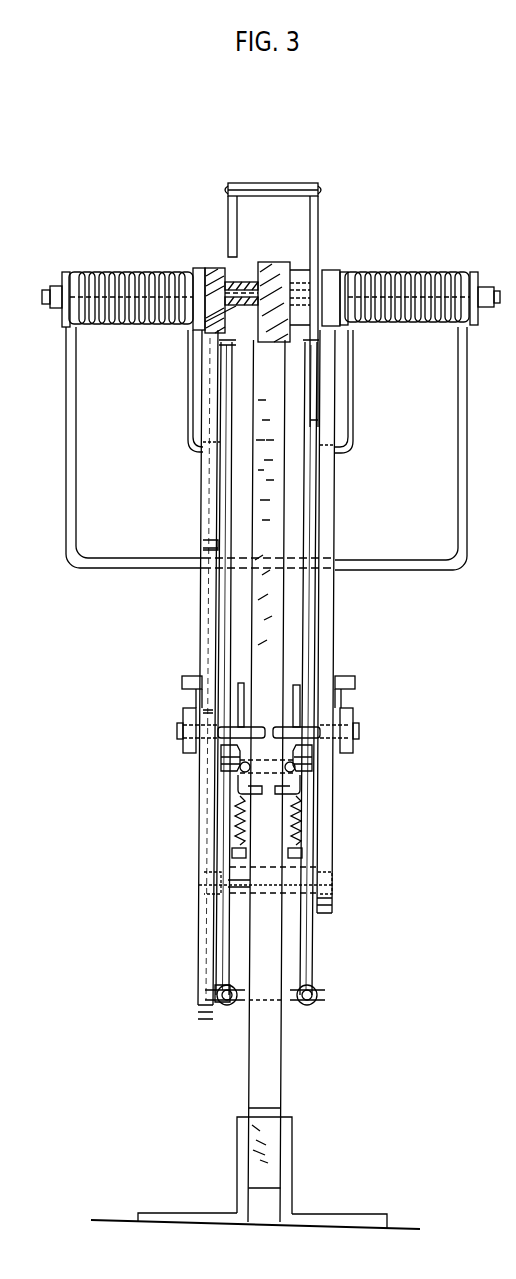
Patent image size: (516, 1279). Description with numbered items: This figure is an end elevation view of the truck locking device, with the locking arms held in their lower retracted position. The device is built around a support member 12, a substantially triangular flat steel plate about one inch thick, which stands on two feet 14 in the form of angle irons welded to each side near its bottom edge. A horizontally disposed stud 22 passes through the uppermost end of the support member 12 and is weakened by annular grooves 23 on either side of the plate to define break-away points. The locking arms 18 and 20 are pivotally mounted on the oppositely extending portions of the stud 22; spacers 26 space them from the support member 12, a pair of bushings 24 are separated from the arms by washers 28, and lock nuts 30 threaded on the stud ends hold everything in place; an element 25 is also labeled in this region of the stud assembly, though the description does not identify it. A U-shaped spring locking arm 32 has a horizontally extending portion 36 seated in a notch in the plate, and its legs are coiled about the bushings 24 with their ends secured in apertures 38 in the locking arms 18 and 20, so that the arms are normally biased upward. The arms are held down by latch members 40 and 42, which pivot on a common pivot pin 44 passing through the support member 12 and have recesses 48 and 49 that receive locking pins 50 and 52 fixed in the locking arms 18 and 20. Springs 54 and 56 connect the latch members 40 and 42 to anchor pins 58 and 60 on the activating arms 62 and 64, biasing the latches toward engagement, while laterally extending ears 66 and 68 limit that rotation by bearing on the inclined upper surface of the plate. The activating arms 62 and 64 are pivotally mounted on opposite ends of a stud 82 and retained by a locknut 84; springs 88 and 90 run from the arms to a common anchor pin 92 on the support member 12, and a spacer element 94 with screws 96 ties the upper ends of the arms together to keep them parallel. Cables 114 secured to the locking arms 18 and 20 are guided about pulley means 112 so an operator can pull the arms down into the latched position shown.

The support member 12 is at (275, 1097).
The feet 14 is at (240, 1152).
The locking arm 18 is at (210, 963).
The locking arm 20 is at (336, 908).
The stud 22 is at (48, 286).
The annular grooves 23 is at (262, 335).
The bushings 24 is at (198, 270).
The clamp face 25 is at (212, 328).
The spacers 26 is at (288, 265).
The washers 28 is at (67, 271).
The lock nuts 30 is at (60, 309).
The spring locking arm 32 is at (76, 480).
The horizontally extending portion 36 is at (138, 572).
The apertures 38 is at (197, 452).
The latch member 40 is at (234, 703).
The latch member 42 is at (303, 698).
The pivot pin 44 is at (232, 771).
The recess 48 is at (226, 742).
The recess 49 is at (312, 748).
The locking pin 50 is at (262, 706).
The locking pin 52 is at (290, 722).
The spring 54 is at (238, 817).
The spring 56 is at (300, 821).
The anchor pin 58 is at (232, 854).
The anchor pin 60 is at (302, 853).
The activating arm 62 is at (226, 589).
The activating arm 64 is at (318, 631).
The laterally extending ear 66 is at (240, 793).
The laterally extending ear 68 is at (296, 796).
The stud 82 is at (242, 898).
The locknut 84 is at (206, 886).
The spring 88 is at (232, 1006).
The spring 90 is at (310, 1006).
The anchor pin 92 is at (268, 1005).
The spacer element 94 is at (272, 184).
The screws 96 is at (228, 190).
The pulley means 112 is at (183, 717).
The cables 114 is at (188, 701).